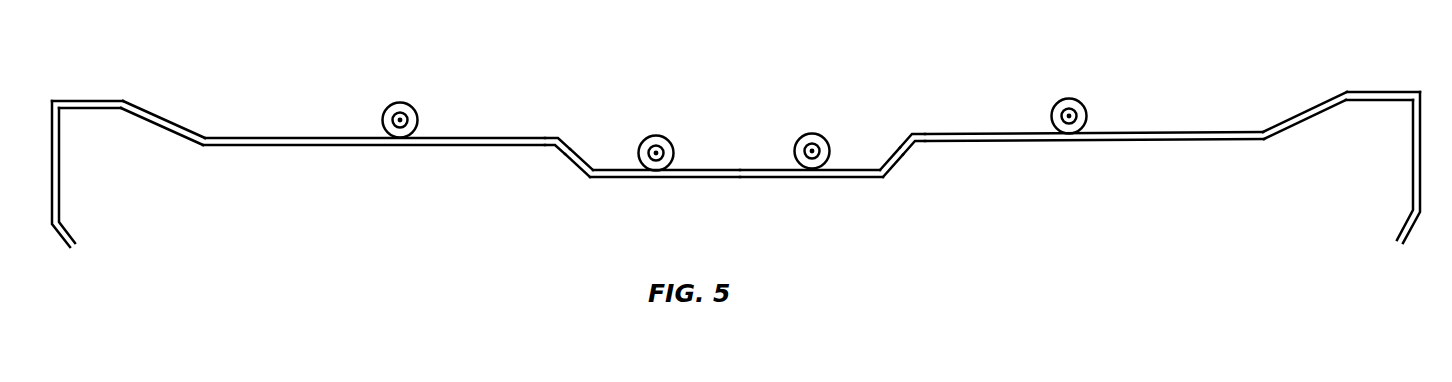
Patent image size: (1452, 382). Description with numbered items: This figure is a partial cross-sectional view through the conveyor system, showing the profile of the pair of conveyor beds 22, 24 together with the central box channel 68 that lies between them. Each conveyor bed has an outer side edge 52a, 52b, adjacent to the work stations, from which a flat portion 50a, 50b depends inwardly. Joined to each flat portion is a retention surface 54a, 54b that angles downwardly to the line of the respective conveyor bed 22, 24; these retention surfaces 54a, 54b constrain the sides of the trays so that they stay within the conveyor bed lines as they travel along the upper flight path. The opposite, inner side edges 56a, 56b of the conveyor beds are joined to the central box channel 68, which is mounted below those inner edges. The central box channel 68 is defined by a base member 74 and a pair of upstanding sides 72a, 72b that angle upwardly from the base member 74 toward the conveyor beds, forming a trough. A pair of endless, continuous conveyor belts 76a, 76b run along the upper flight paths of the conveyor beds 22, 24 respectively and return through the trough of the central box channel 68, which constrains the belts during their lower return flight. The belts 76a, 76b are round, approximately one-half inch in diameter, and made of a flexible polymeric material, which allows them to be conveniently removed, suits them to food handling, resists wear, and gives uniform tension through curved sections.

The conveyor bed 22 is at (497, 136).
The conveyor bed 24 is at (1186, 131).
The flat portion 50a is at (100, 100).
The flat portion 50b is at (1400, 91).
The side edge 52a is at (52, 100).
The side edge 52b is at (1412, 102).
The retention surface 54a is at (168, 120).
The retention surface 54b is at (1310, 108).
The side edge 56a is at (562, 137).
The side edge 56b is at (910, 133).
The central box channel 68 is at (613, 182).
The upstanding side 72a is at (585, 160).
The upstanding side 72b is at (887, 158).
The base member 74 is at (842, 181).
The conveyor belt 76a is at (389, 110).
The conveyor belt 76b is at (818, 135).